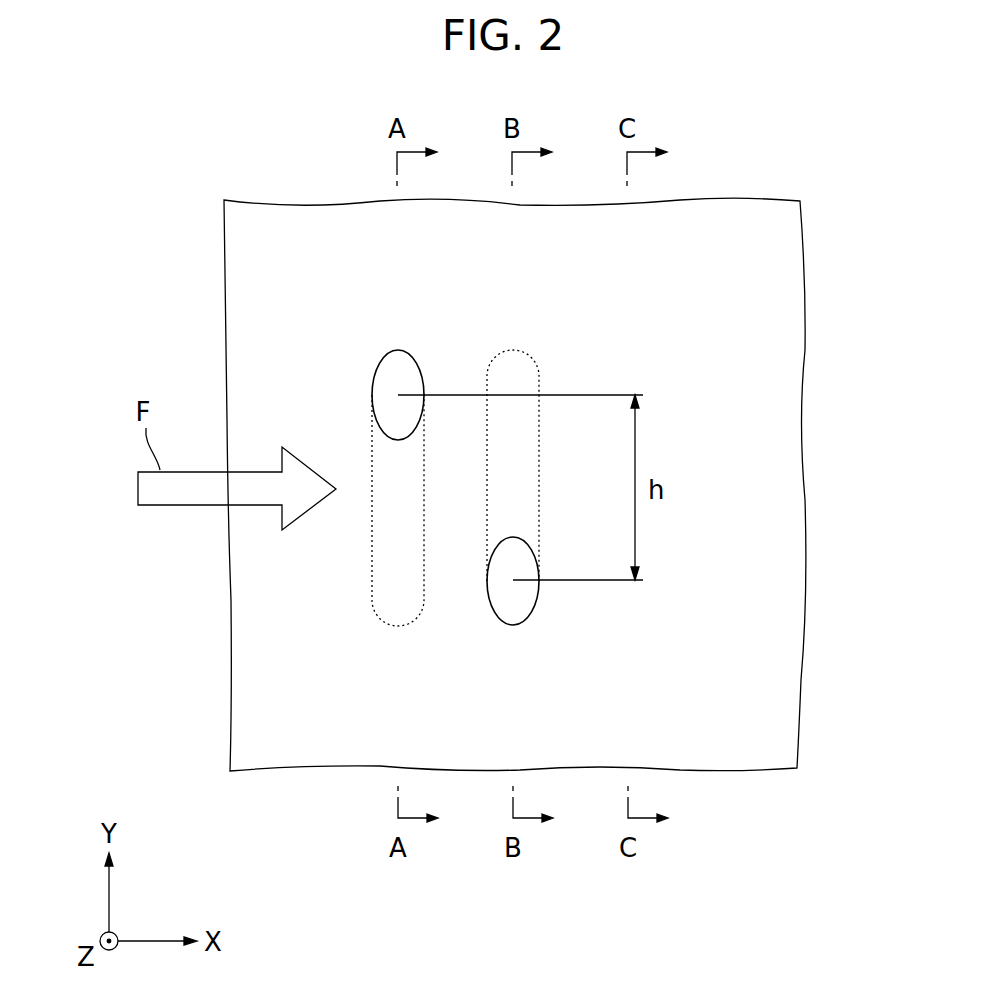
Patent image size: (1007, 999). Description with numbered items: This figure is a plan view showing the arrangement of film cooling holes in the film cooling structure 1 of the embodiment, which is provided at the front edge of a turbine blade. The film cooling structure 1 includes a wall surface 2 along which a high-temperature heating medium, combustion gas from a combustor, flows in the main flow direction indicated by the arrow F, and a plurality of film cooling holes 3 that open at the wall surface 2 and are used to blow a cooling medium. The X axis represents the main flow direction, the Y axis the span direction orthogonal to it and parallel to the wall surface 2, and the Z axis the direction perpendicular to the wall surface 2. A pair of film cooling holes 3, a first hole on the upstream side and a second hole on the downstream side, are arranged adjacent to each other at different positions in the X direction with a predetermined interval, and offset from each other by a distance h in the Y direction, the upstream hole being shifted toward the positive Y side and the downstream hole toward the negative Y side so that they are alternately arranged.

The film cooling structure 1 is at (253, 182).
The wall surface 2 is at (305, 245).
The film cooling holes 3 is at (401, 360).